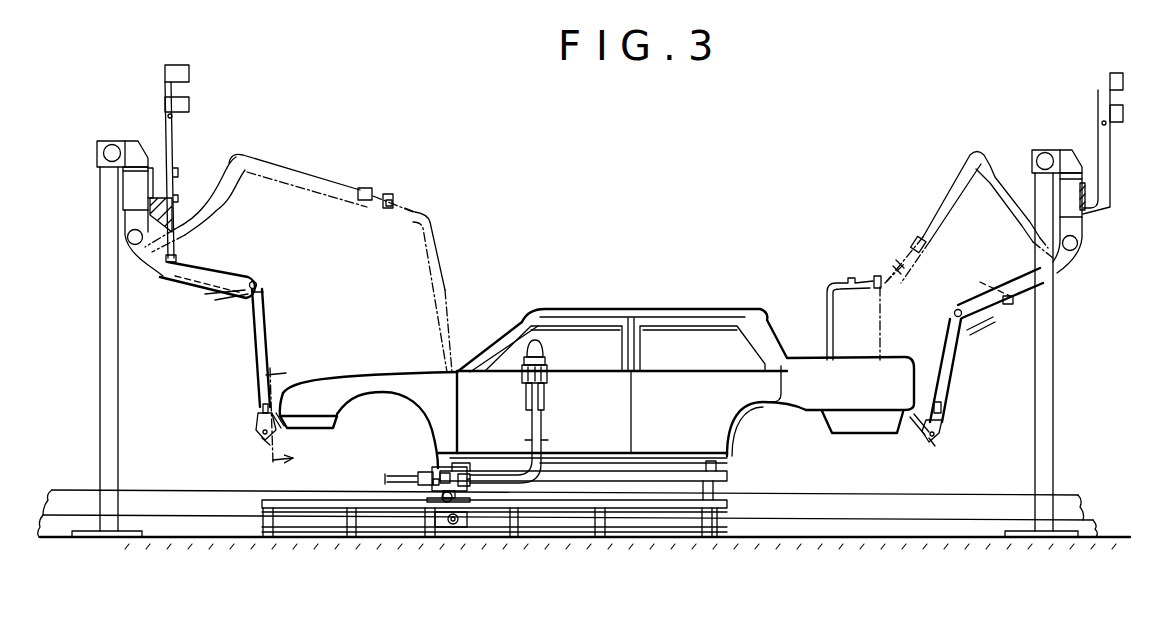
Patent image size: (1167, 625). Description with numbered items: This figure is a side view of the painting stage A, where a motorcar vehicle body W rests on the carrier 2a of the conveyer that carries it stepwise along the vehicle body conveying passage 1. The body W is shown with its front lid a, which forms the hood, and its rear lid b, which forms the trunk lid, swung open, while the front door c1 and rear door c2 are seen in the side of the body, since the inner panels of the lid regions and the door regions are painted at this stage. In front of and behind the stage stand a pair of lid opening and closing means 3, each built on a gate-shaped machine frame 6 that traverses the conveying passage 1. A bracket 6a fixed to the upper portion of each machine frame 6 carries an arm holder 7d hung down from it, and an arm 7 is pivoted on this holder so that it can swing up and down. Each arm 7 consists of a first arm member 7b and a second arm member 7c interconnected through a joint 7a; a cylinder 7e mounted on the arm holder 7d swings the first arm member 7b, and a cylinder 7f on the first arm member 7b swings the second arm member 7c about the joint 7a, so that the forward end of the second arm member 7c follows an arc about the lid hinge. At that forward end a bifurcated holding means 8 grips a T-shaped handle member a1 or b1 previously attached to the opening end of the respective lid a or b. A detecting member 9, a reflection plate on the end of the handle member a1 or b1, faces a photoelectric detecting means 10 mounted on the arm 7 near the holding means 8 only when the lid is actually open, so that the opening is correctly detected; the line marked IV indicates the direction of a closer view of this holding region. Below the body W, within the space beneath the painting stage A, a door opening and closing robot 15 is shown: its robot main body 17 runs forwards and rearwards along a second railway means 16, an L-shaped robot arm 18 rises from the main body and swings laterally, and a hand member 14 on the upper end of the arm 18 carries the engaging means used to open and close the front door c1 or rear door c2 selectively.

The vehicle body conveying passage 1 is at (198, 483).
The carrier 2a is at (655, 477).
The lid opening and closing means 3 is at (112, 130).
The gate-shaped machine frame 6 is at (107, 370).
The bracket 6a is at (130, 141).
The arm 7 is at (232, 273).
The joint 7a is at (260, 280).
The first arm member 7b is at (128, 194).
The second arm member 7c is at (268, 320).
The arm holder 7d is at (1085, 210).
The cylinder 7e is at (165, 86).
The cylinder 7f is at (203, 282).
The holding means 8 is at (262, 442).
The detecting member 9 is at (260, 430).
The detecting means 10 is at (260, 407).
The hand member 14 is at (550, 362).
The door opening and closing robot 15 is at (546, 443).
The second railway means 16 is at (378, 498).
The robot main body 17 is at (450, 468).
The robot arm 18 is at (530, 447).
The painting stage A is at (622, 232).
The motorcar vehicle body W is at (645, 316).
The front lid a is at (443, 292).
The handle member a1 is at (282, 428).
The rear lid b is at (827, 310).
The handle member b1 is at (881, 292).
The front door c1 is at (592, 380).
The rear door c2 is at (695, 380).
The section line IV- IV is at (295, 414).